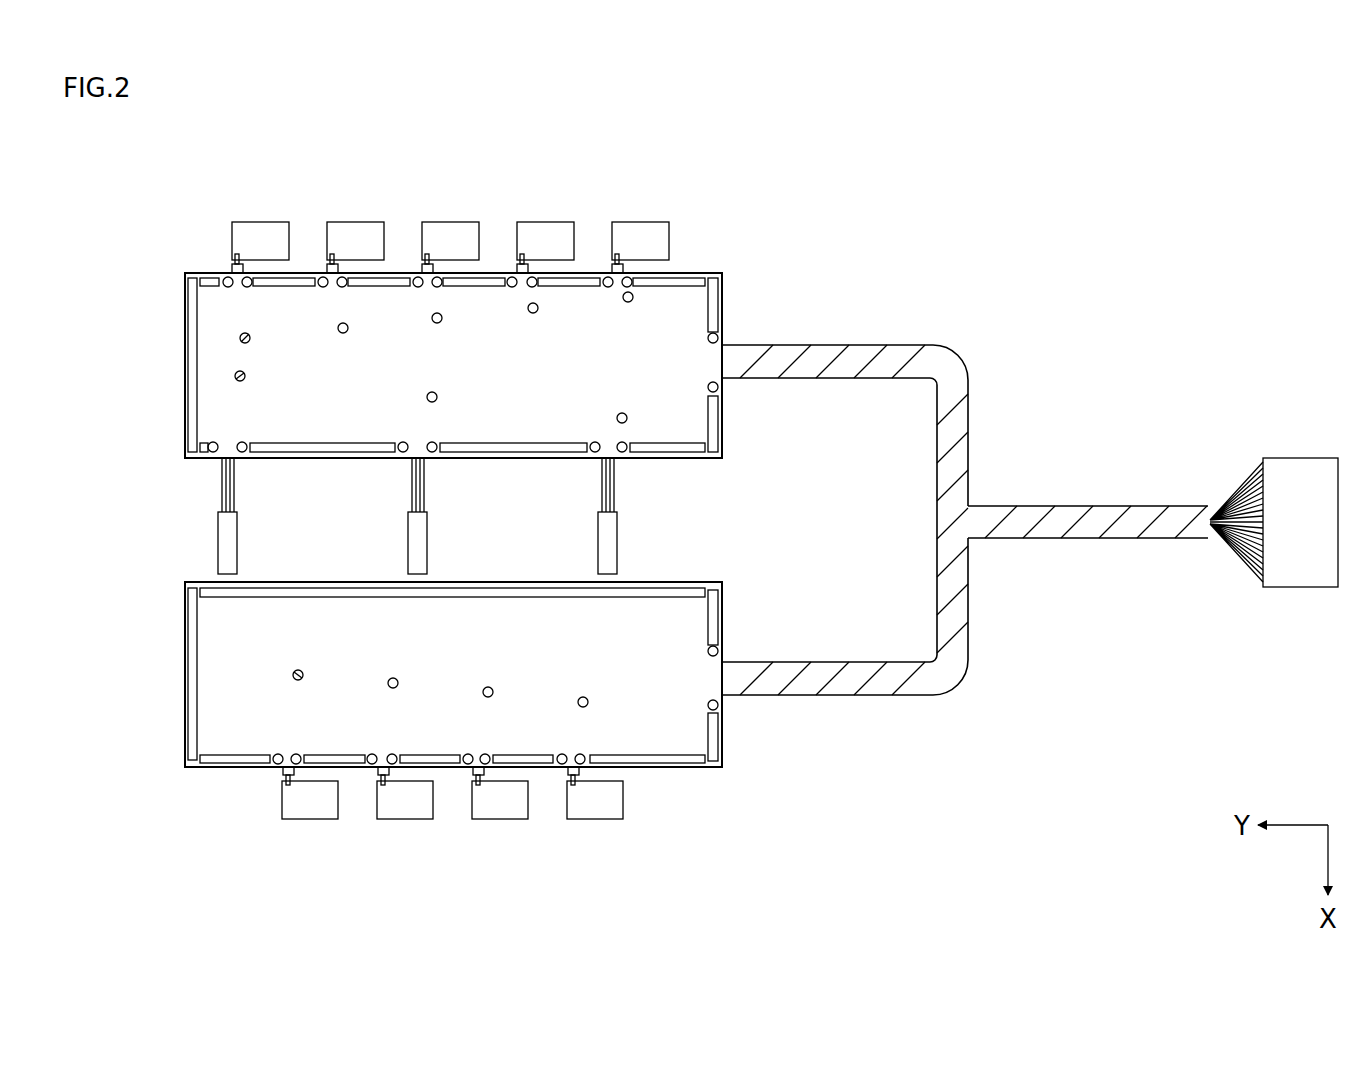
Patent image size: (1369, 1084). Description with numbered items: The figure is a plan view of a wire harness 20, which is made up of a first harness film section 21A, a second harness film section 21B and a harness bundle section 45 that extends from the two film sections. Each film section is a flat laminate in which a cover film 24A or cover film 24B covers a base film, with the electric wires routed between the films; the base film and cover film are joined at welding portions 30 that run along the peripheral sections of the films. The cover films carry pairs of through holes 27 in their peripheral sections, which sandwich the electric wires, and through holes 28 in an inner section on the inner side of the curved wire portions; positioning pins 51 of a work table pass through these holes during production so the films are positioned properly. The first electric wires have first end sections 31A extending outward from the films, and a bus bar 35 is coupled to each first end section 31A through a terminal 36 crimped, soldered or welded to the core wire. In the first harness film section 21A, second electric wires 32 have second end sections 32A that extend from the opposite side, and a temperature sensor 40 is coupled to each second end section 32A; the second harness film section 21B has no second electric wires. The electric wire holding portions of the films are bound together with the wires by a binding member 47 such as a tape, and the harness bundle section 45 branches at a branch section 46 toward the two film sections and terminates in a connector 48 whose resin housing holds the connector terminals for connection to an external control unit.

The wire harness 20 is at (943, 190).
The first harness film section 21A is at (712, 232).
The second harness film section 21B is at (730, 786).
The cover film 24A is at (680, 418).
The cover film 24B is at (678, 630).
The through hole 27 is at (434, 288).
The through hole 28 is at (248, 342).
The welding portion 30 is at (365, 286).
The first end section 31A is at (228, 215).
The second electric wire 32 is at (236, 480).
The second end section 32A is at (190, 536).
The bus bar 35 is at (260, 234).
The terminal 36 is at (232, 268).
The temperature sensor 40 is at (237, 540).
The harness bundle section 45 is at (1110, 398).
The branch section 46 is at (958, 505).
The binding member 47 is at (1060, 522).
The connector 48 is at (1302, 480).
The positioning pin 51 is at (296, 681).